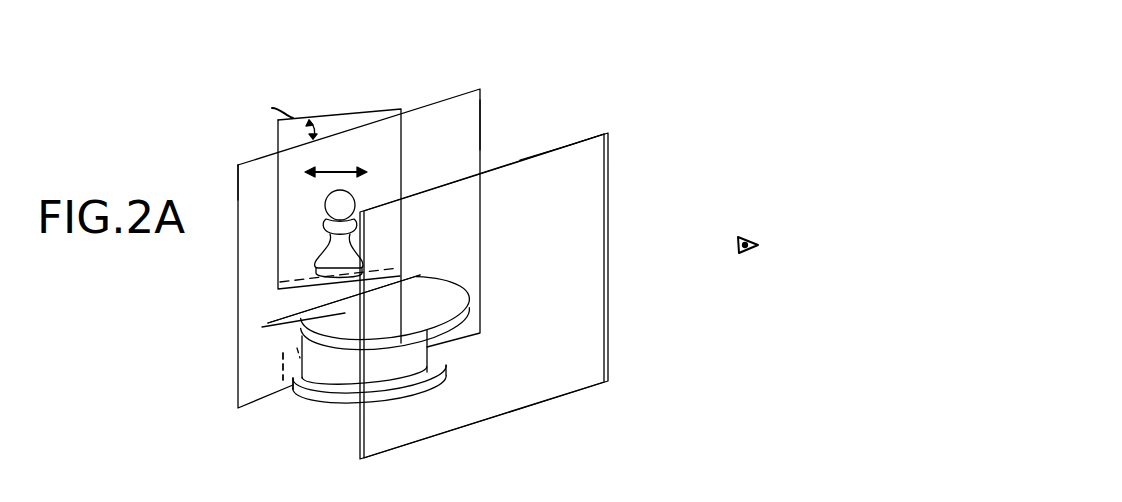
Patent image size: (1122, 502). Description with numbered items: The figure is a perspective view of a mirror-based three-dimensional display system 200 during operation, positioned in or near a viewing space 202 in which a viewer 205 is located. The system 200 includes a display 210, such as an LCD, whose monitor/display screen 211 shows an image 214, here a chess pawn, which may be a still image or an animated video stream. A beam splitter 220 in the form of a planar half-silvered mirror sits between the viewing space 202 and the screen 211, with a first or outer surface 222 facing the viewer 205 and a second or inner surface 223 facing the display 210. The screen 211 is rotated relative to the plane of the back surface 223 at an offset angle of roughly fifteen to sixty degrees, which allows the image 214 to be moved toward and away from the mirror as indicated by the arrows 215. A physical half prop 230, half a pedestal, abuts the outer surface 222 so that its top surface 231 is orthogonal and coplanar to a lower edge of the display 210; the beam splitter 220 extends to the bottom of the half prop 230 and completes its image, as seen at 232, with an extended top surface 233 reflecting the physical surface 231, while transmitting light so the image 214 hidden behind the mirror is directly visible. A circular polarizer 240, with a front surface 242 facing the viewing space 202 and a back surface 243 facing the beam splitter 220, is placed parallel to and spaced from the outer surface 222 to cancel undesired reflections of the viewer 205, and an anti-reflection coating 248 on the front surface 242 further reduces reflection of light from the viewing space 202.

The mirror-based 3D display system 200 is at (742, 50).
The viewing space 202 is at (723, 377).
The viewer 205 is at (777, 228).
The display 210 is at (350, 113).
The monitor/display screen 211 is at (343, 130).
The image 214 is at (345, 203).
The arrows 215 is at (334, 170).
The beam splitter 220 is at (482, 94).
The first or outer surface 222 is at (481, 125).
The second or inner surface 223 is at (239, 165).
The half prop 230 is at (329, 365).
The top surface 231 is at (285, 342).
The completed image of the half prop 232 is at (258, 312).
The extended top surface 233 is at (288, 303).
The polarizer 240 is at (605, 133).
The first or front surface 242 is at (583, 135).
The second or back surface 243 is at (551, 138).
The anti-reflection coating 248 is at (607, 157).